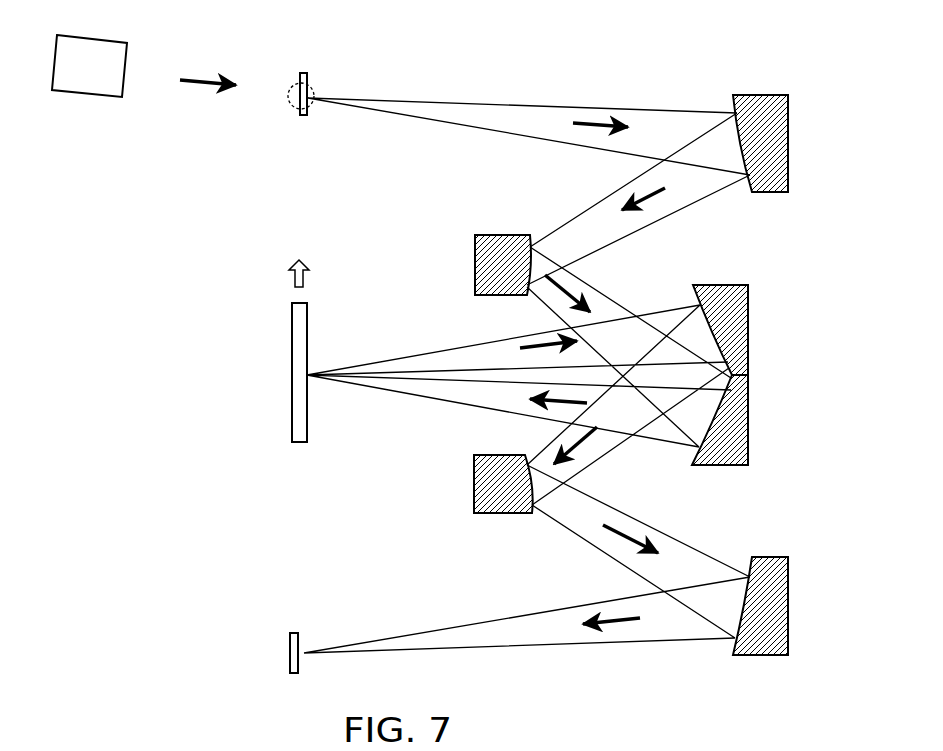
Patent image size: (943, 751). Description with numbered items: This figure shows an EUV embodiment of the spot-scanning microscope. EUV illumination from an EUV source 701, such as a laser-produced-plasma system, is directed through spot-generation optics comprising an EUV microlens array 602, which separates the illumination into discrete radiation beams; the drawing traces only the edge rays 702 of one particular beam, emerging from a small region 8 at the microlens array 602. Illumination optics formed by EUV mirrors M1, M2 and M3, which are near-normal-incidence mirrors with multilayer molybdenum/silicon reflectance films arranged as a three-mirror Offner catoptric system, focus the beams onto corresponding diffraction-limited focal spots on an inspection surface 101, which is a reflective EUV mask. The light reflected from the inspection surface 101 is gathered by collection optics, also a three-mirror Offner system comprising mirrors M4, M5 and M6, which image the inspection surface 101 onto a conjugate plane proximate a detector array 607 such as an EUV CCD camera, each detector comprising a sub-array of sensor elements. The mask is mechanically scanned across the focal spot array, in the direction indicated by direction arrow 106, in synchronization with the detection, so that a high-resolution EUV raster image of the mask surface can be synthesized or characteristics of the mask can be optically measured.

The EUV source 701 is at (128, 58).
The illumination field 8 is at (317, 88).
The EUV microlens array 602 is at (311, 105).
The edge rays 702 is at (472, 122).
The direction arrow 106 is at (294, 262).
The inspection surface 101 is at (309, 331).
The detector array 607 is at (305, 640).
The EUV mirror M1 is at (743, 135).
The EUV mirror M2 is at (533, 258).
The EUV mirror M3 is at (707, 430).
The mirror M4 is at (707, 327).
The mirror M5 is at (535, 495).
The mirror M6 is at (745, 612).